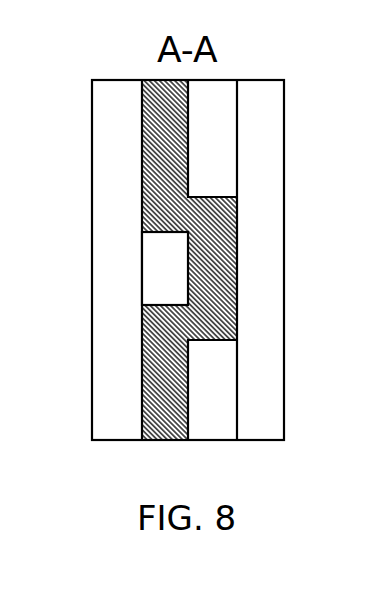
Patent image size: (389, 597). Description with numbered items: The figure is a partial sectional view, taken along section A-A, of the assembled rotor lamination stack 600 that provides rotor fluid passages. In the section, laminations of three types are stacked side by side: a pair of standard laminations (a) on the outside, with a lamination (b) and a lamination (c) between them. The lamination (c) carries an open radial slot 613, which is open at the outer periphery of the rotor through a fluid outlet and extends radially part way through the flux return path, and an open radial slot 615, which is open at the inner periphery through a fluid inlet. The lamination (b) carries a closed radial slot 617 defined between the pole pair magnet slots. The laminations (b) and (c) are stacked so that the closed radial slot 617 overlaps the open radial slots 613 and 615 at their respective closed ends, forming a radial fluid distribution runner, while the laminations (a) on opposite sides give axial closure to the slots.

The rotor lamination stack 600 is at (195, 235).
The open radial slot 613 is at (142, 127).
The open radial slot 615 is at (142, 379).
The closed radial slot 617 is at (237, 266).